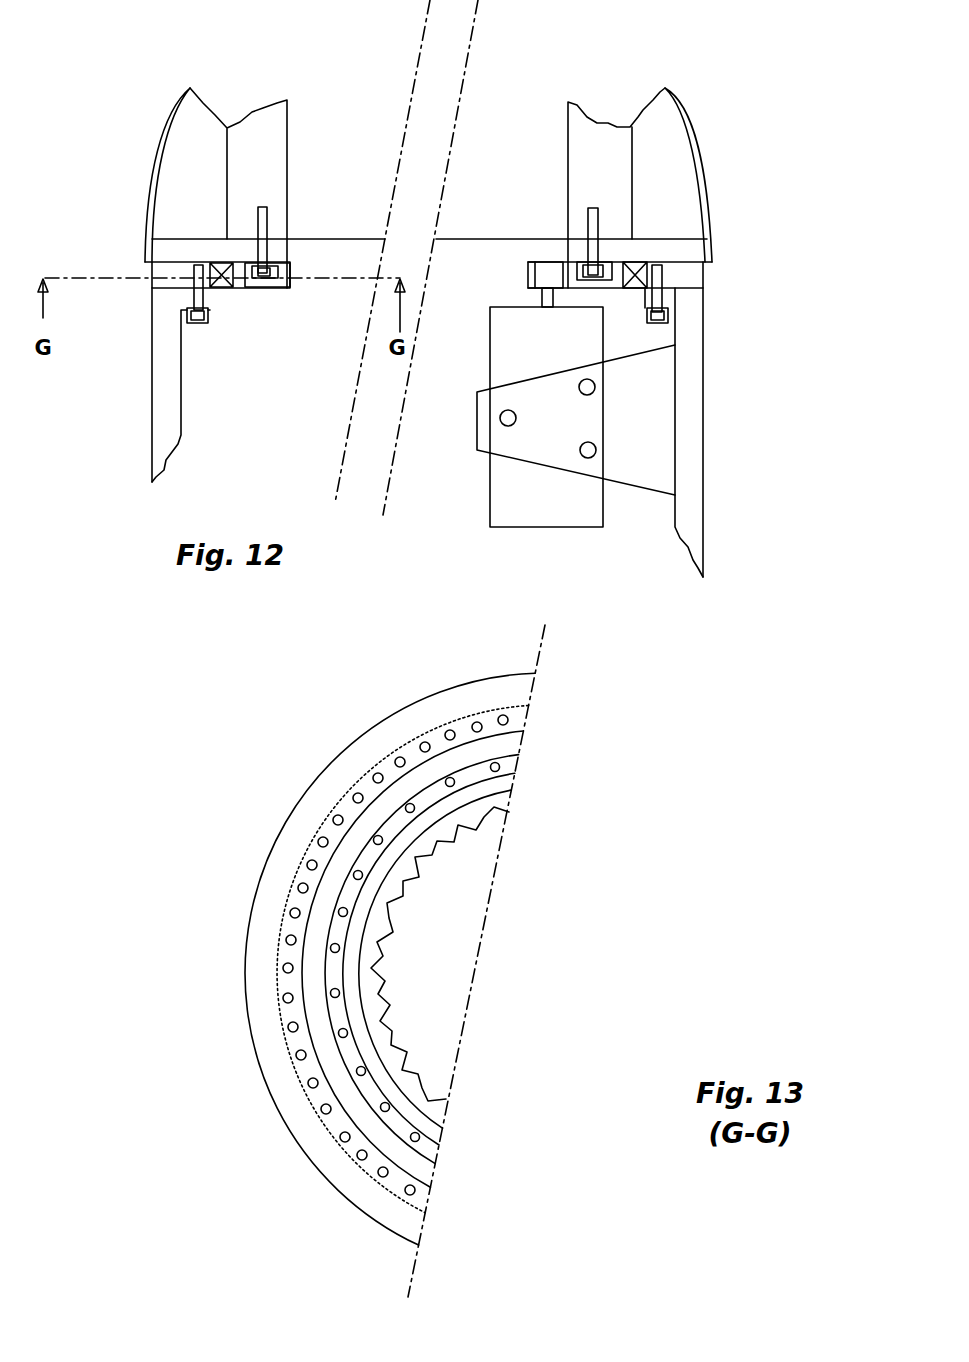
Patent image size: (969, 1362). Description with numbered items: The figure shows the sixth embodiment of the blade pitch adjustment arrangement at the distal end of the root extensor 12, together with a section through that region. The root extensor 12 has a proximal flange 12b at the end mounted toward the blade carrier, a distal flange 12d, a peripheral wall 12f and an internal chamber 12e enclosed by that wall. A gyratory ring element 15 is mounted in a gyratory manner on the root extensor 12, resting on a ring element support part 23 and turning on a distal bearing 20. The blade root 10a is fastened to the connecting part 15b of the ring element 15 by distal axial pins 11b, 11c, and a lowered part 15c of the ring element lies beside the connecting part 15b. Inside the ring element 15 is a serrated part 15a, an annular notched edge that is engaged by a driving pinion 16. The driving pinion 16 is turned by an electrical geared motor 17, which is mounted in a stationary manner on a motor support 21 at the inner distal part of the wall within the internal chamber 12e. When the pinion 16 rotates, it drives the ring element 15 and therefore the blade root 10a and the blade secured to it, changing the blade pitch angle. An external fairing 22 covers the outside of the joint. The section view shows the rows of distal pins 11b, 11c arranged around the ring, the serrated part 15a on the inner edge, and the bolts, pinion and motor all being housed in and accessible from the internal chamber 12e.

In FIG. 12, the blade root 10a is at (258, 128).
In FIG. 12, the distal axial pins 11b is at (190, 295).
In FIG. 13, the distal axial pins 11b is at (507, 787).
In FIG. 12, the distal axial pins 11c is at (260, 242).
In FIG. 13, the distal axial pins 11c is at (323, 842).
In FIG. 12, the root extensor 12 is at (153, 425).
In FIG. 12, the proximal flange 12b is at (705, 295).
In FIG. 12, the distal flange 12d is at (210, 310).
In FIG. 13, the distal flange 12d is at (300, 1072).
In FIG. 12, the internal chamber 12e is at (195, 370).
In FIG. 12, the peripheral wall 12f is at (693, 525).
In FIG. 13, the peripheral wall 12f is at (305, 1130).
In FIG. 12, the ring element 15 is at (175, 248).
In FIG. 12, the serrated part 15a is at (288, 270).
In FIG. 13, the serrated part 15a is at (442, 830).
In FIG. 12, the connecting part 15b is at (237, 290).
In FIG. 13, the connecting part 15b is at (318, 955).
In FIG. 12, the lowered part 15c is at (273, 288).
In FIG. 13, the lowered part 15c is at (348, 893).
In FIG. 12, the driving pinion 16 is at (548, 272).
In FIG. 12, the electrical geared motor 17 is at (507, 503).
In FIG. 12, the distal bearing 20 is at (220, 273).
In FIG. 12, the motor/engine support 21 is at (623, 457).
In FIG. 12, the external fairing 22 is at (172, 100).
In FIG. 12, the ring element support part 23 is at (167, 273).